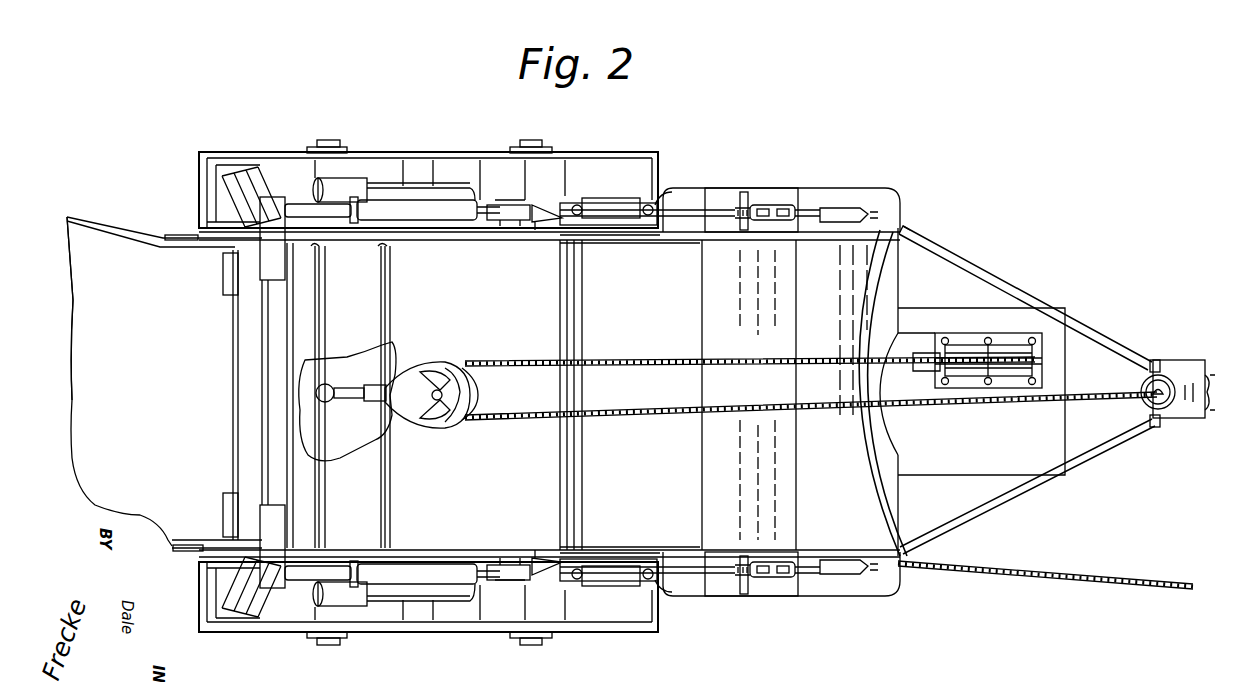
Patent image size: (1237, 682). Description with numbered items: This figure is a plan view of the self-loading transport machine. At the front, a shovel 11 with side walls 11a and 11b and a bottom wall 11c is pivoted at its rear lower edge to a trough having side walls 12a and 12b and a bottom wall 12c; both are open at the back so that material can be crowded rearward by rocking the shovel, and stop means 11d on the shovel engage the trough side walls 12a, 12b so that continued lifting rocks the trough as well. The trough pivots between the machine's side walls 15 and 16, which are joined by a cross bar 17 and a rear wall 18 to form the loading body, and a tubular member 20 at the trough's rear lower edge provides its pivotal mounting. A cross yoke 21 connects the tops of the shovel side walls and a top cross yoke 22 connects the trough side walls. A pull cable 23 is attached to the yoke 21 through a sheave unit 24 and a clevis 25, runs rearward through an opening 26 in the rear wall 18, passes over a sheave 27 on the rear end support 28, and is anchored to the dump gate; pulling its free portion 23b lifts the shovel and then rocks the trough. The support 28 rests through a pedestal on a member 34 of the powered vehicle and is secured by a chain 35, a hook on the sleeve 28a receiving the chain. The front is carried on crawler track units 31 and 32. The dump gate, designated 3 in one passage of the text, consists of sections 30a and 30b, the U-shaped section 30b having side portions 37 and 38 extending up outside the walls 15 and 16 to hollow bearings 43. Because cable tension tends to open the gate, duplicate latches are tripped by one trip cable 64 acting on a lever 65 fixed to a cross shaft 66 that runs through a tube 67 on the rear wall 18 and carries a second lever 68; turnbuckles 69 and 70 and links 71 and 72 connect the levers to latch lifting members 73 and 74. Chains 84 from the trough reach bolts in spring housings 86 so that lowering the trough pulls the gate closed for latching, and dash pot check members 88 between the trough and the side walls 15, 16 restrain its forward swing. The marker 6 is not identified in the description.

The shovel 11 is at (100, 228).
The side wall 11a is at (146, 248).
The side wall 11b is at (198, 537).
The bottom wall 11c is at (80, 338).
The stop means 11d is at (183, 226).
The side wall 12a is at (436, 240).
The side wall 12b is at (488, 550).
The bottom wall 12c is at (435, 513).
The side wall 15 is at (614, 240).
The side wall 16 is at (636, 550).
The cross bar 17 is at (583, 500).
The rear wall 18 is at (858, 338).
The tubular member 20 is at (585, 330).
The cross yoke 21 is at (347, 401).
The top cross yoke 22 is at (306, 392).
The pull cable 23 is at (506, 364).
The free portion of cable 23b is at (1130, 398).
The sheave unit 24 is at (418, 425).
The clevis 25 is at (352, 386).
The opening 26 is at (900, 448).
The sheave 27 is at (972, 333).
The rear end support 28 is at (1112, 448).
The sleeve 28a is at (1140, 375).
The gate section 30a is at (671, 395).
The gate section 30b is at (761, 395).
The crawler track unit 31 is at (422, 625).
The crawler track unit 32 is at (435, 152).
The member 34 is at (1190, 360).
The chain 35 is at (1203, 410).
The side portion 37 is at (650, 244).
The side portion 38 is at (648, 555).
The hollow bearing 43 is at (612, 198).
The trip cable 64 is at (1017, 575).
The lever 65 is at (840, 560).
The cross shaft 66 is at (884, 560).
The tube 67 is at (865, 258).
The lever 68 is at (864, 225).
The turnbuckle 69 is at (776, 580).
The turnbuckle 70 is at (786, 200).
The link 71 is at (700, 585).
The link 72 is at (686, 212).
The latch lifting member 73 is at (555, 553).
The latch lifting member 74 is at (545, 230).
The chain 84 is at (528, 200).
The spring housing 86 is at (652, 192).
The dash pot check member 88 is at (372, 228).
The dump gate 3 is at (398, 350).
The section line 6- 6 is at (536, 392).